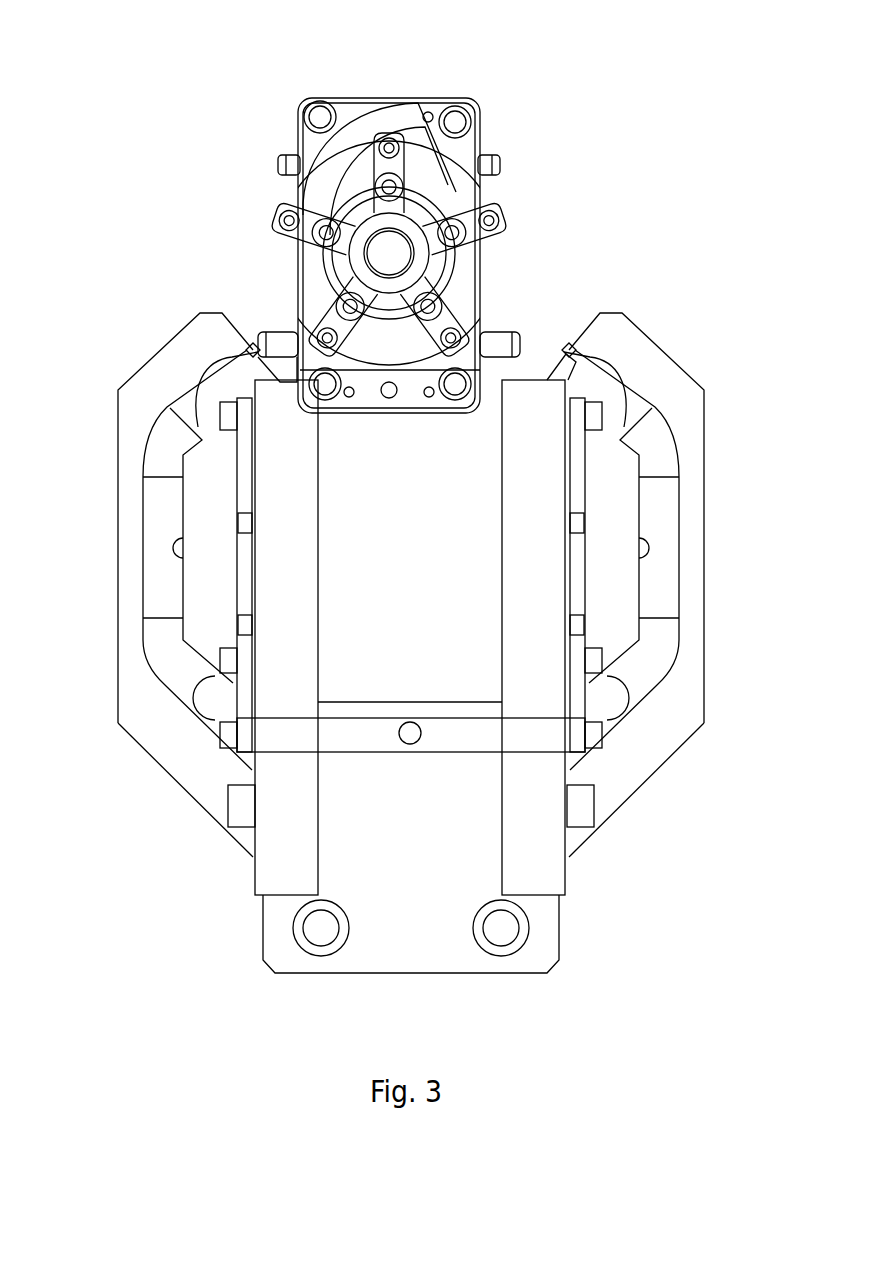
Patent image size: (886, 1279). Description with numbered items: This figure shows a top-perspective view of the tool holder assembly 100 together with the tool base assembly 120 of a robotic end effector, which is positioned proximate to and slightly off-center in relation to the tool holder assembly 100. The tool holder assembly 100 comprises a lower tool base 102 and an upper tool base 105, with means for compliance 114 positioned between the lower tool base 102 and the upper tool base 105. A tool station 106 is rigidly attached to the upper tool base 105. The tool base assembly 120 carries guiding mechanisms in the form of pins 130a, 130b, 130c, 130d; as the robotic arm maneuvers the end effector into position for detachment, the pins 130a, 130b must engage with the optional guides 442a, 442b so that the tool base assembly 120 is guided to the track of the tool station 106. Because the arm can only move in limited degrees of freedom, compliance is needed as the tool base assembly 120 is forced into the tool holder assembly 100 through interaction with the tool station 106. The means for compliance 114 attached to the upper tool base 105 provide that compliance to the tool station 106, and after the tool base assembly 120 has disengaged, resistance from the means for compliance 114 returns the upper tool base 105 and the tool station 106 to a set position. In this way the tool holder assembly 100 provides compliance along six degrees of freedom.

The tool holder assembly 100 is at (681, 986).
The lower tool base 102 is at (684, 793).
The upper tool base 105 is at (210, 638).
The tool station 106 is at (226, 902).
The means for compliance 114 is at (590, 390).
The tool base assembly 120 is at (557, 171).
The pin 130a is at (492, 343).
The pin 130b is at (278, 340).
The pin 130c is at (500, 163).
The pin 130d is at (288, 160).
The guide 442a is at (557, 355).
The guide 442b is at (252, 345).